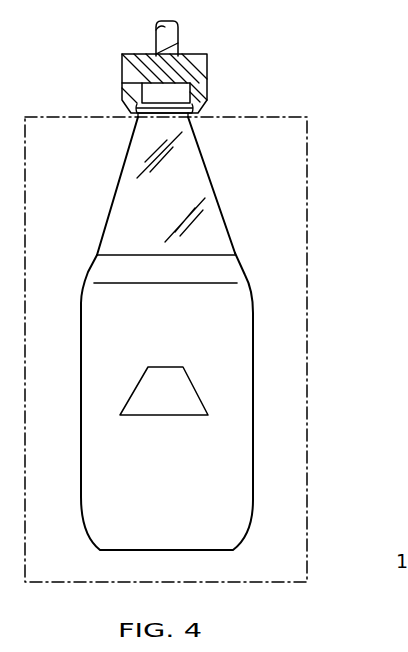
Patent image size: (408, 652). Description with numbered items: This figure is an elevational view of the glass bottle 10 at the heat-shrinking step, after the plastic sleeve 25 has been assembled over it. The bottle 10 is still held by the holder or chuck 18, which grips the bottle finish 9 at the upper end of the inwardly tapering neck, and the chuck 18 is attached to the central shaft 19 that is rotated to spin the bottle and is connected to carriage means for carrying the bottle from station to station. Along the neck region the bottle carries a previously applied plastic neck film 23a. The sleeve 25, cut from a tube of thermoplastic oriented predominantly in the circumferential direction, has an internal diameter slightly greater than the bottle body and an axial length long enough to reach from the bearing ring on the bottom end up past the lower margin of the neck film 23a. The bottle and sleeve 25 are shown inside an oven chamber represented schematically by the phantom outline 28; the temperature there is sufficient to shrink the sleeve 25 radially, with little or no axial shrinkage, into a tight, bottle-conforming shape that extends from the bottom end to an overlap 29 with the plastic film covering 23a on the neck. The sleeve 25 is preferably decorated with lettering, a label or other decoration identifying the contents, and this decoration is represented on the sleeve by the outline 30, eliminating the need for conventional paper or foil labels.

The glass bottle 10 is at (242, 214).
The chuck 18 is at (209, 95).
The central shaft 19 is at (157, 34).
The bottle finish 9 is at (173, 95).
The neck film 23a is at (187, 165).
The overlap 29 is at (242, 272).
The sleeve 25 is at (242, 500).
The outline 30 is at (163, 417).
The phantom outline 28 is at (307, 338).